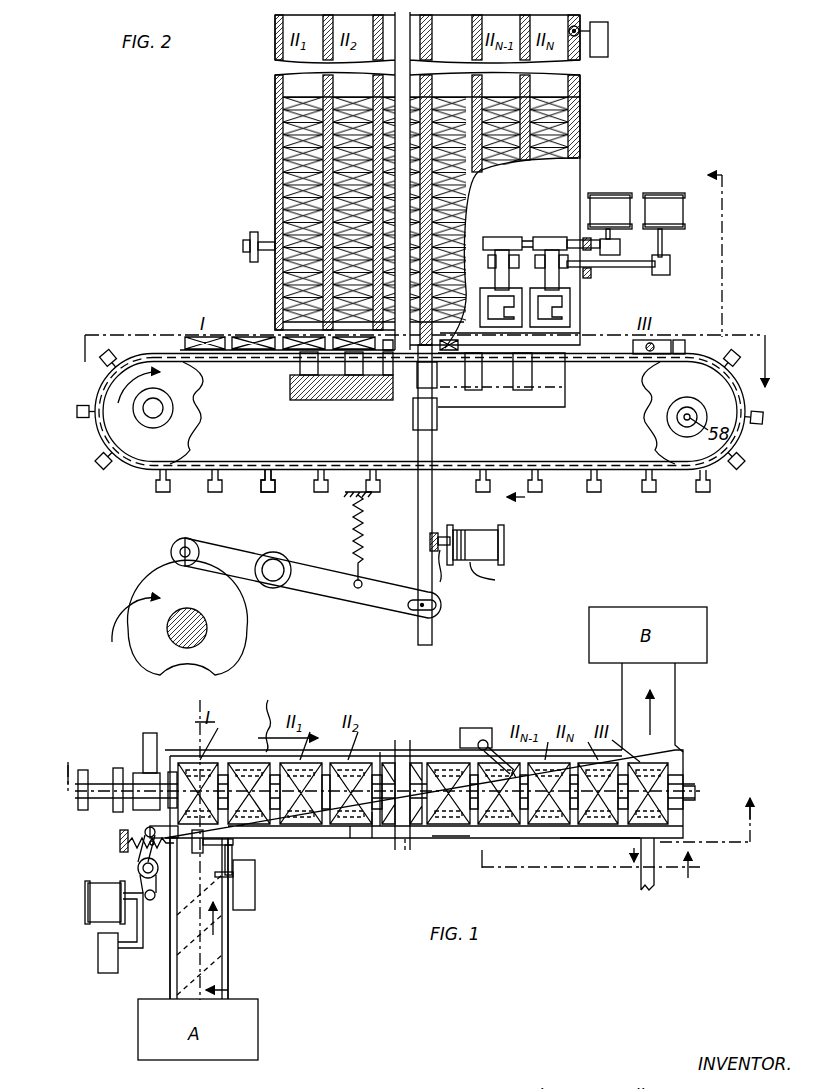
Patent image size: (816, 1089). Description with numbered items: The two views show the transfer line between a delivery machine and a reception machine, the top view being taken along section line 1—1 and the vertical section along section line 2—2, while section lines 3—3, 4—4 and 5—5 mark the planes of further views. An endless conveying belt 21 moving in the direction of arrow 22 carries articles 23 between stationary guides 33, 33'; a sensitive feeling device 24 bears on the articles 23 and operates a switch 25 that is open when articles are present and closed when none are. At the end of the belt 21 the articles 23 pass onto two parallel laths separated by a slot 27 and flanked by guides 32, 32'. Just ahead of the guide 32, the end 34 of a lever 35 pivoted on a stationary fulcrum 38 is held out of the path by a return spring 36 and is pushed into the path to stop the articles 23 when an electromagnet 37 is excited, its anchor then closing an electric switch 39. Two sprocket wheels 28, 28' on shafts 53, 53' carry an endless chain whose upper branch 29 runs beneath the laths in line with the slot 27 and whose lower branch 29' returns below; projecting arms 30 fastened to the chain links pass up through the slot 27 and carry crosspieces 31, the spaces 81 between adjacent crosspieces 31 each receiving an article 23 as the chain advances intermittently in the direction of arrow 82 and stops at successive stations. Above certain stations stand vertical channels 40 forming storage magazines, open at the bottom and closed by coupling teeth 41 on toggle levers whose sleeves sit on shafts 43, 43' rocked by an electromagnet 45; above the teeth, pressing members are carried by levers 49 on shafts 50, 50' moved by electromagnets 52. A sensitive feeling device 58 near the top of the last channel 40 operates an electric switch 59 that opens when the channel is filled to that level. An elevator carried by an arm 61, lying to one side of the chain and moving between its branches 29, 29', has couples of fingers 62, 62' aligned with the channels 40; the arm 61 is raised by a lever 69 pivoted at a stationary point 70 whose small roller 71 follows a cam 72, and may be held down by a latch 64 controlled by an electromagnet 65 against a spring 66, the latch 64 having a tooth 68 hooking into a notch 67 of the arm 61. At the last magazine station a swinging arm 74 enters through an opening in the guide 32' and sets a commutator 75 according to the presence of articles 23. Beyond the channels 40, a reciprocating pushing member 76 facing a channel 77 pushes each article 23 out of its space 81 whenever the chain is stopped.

In FIG. 2, the section line 1 is at (420, 365).
In FIG. 1, the section line 2 is at (403, 792).
In FIG. 2, the section line 3- 3 is at (614, 331).
In FIG. 1, the section line 4- 4 is at (200, 853).
In FIG. 1, the section line 5- 5 is at (591, 873).
In FIG. 1, the endless conveying belt 21 is at (205, 958).
In FIG. 1, the arrow 22 is at (207, 915).
In FIG. 1, the articles 23 is at (604, 836).
In FIG. 1, the sensitive feeling device 24 is at (240, 842).
In FIG. 1, the switch 25 is at (255, 888).
In FIG. 1, the slot 27 is at (408, 848).
In FIG. 2, the sprocket wheel 28 is at (176, 413).
In FIG. 1, the sprocket wheel 28 is at (387, 778).
In FIG. 2, the sprocket wheel 28' is at (671, 413).
In FIG. 2, the endless chain 29 is at (319, 366).
In FIG. 2, the chain lower branch 29' is at (433, 457).
In FIG. 2, the projecting arms 30 is at (360, 466).
In FIG. 2, the crosspieces 31 is at (264, 485).
In FIG. 1, the crosspieces 31 is at (374, 838).
In FIG. 1, the guide 32 is at (451, 854).
In FIG. 1, the guide 32' is at (409, 766).
In FIG. 1, the stationary guide 33 is at (151, 918).
In FIG. 1, the stationary guide 33' is at (254, 918).
In FIG. 1, the lever end 34 is at (146, 833).
In FIG. 1, the lever 35 is at (140, 919).
In FIG. 1, the return spring 36 is at (120, 836).
In FIG. 1, the electromagnet 37 is at (90, 905).
In FIG. 1, the stationary fulcrum 38 is at (138, 870).
In FIG. 1, the electric switch 39 is at (100, 958).
In FIG. 2, the vertical channels 40 is at (288, 80).
In FIG. 2, the coupling teeth 41 is at (560, 312).
In FIG. 2, the shaft 43 is at (236, 246).
In FIG. 2, the shaft 43' is at (677, 268).
In FIG. 2, the electromagnet 45 is at (660, 206).
In FIG. 2, the levers 49 is at (562, 282).
In FIG. 2, the shaft 50 is at (251, 223).
In FIG. 2, the shaft 50' is at (511, 253).
In FIG. 2, the electromagnets 52 is at (604, 206).
In FIG. 2, the shaft 53 is at (150, 400).
In FIG. 2, the shaft 53' is at (679, 425).
In FIG. 2, the sensitive feeling device 58 is at (585, 28).
In FIG. 2, the electric switch 59 is at (608, 42).
In FIG. 2, the arm 61 is at (420, 508).
In FIG. 2, the fingers 62 is at (510, 380).
In FIG. 2, the fingers 62' is at (322, 384).
In FIG. 2, the latch 64 is at (443, 536).
In FIG. 2, the electromagnet 65 is at (498, 542).
In FIG. 2, the spring 66 is at (495, 574).
In FIG. 2, the notch 67 is at (454, 575).
In FIG. 2, the tooth 68 is at (430, 544).
In FIG. 2, the lever 69 is at (390, 606).
In FIG. 2, the stationary point 70 is at (275, 578).
In FIG. 2, the small roller 71 is at (172, 548).
In FIG. 2, the cam 72 is at (240, 632).
In FIG. 1, the swinging arm 74 is at (528, 776).
In FIG. 1, the commutator 75 is at (478, 728).
In FIG. 2, the pushing member 76 is at (655, 345).
In FIG. 1, the pushing member 76 is at (645, 878).
In FIG. 1, the channel 77 is at (660, 702).
In FIG. 1, the spaces 81 is at (178, 760).
In FIG. 1, the arrow 82 is at (279, 716).